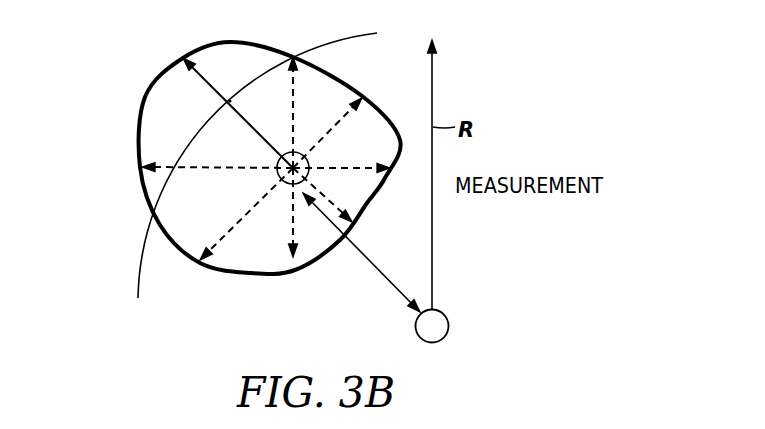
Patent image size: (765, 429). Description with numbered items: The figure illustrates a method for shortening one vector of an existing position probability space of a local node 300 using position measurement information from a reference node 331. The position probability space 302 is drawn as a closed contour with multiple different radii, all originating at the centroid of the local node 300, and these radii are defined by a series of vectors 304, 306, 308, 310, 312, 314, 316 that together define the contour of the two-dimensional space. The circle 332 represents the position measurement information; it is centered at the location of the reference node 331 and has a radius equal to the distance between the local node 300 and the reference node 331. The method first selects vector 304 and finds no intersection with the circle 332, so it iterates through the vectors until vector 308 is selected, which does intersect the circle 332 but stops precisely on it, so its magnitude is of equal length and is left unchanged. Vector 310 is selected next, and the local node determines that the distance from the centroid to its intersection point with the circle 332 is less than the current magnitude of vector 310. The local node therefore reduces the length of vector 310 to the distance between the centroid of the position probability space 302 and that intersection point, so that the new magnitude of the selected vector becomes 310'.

The local node 300 is at (305, 176).
The position probability space 302 is at (145, 97).
The vector 304 is at (393, 170).
The vector 306 is at (365, 96).
The vector 308 is at (293, 56).
The vector 310 is at (210, 107).
The new magnitude of vector 310' is at (229, 79).
The vector 312 is at (138, 166).
The vector 314 is at (200, 263).
The vector 316 is at (296, 262).
The reference node 331 is at (450, 325).
The circle 332 is at (140, 266).